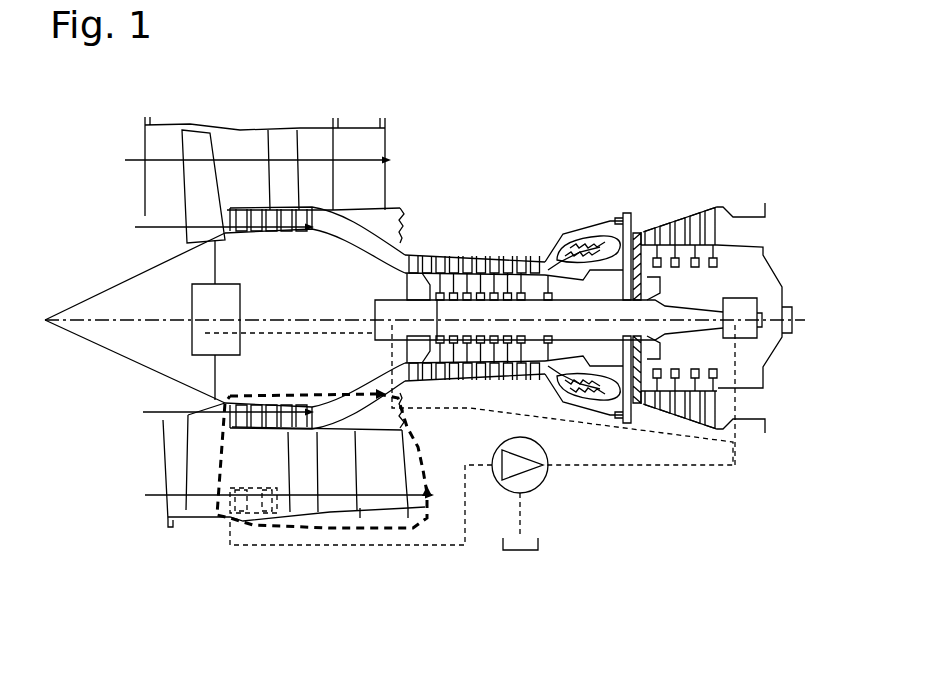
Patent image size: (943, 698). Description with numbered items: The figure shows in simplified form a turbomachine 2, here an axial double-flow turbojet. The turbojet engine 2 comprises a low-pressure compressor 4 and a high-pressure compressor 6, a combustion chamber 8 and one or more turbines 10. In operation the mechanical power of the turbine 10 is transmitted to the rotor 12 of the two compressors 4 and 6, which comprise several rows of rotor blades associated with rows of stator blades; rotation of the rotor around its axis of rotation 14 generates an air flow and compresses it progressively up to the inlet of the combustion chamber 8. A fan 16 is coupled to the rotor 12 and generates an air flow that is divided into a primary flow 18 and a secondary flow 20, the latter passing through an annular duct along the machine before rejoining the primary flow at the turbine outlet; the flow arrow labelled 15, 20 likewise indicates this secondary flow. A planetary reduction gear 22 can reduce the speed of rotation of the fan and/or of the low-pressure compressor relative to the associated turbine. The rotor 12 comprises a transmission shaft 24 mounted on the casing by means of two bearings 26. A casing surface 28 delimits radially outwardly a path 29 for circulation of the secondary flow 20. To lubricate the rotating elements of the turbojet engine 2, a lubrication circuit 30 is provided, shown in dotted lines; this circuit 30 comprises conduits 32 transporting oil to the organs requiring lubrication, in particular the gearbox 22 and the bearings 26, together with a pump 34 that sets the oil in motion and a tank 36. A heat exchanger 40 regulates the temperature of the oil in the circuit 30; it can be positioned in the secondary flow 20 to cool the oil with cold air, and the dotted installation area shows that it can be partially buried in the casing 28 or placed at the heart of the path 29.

The turbomachine 2 is at (577, 150).
The low-pressure compressor 4 is at (250, 240).
The high-pressure compressor 6 is at (445, 253).
The combustion chamber 8 is at (573, 263).
The turbine 10 is at (700, 220).
The rotor 12 is at (120, 347).
The axis of rotation 14 is at (82, 302).
The bypass flow 15 is at (254, 495).
The fan 16 is at (200, 182).
The primary flow 18 is at (207, 320).
The secondary flow 20 is at (240, 160).
The planetary reduction gear 22 is at (222, 340).
The transmission shaft 24 is at (665, 300).
The bearings 26 is at (382, 322).
The casing surface 28 is at (370, 507).
The path 29 is at (273, 471).
The lubrication circuit 30 is at (408, 588).
The conduits 32 is at (443, 408).
The pump 34 is at (493, 480).
The tank 36 is at (515, 563).
The heat exchanger 40 is at (213, 533).